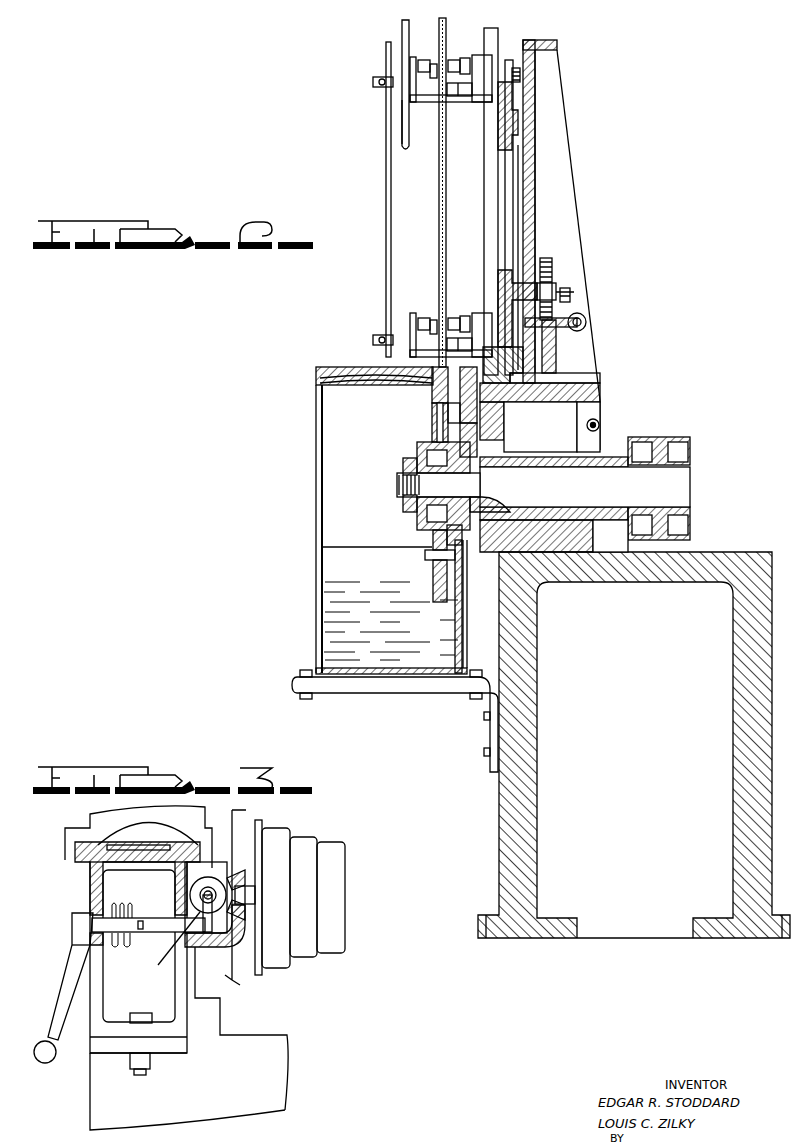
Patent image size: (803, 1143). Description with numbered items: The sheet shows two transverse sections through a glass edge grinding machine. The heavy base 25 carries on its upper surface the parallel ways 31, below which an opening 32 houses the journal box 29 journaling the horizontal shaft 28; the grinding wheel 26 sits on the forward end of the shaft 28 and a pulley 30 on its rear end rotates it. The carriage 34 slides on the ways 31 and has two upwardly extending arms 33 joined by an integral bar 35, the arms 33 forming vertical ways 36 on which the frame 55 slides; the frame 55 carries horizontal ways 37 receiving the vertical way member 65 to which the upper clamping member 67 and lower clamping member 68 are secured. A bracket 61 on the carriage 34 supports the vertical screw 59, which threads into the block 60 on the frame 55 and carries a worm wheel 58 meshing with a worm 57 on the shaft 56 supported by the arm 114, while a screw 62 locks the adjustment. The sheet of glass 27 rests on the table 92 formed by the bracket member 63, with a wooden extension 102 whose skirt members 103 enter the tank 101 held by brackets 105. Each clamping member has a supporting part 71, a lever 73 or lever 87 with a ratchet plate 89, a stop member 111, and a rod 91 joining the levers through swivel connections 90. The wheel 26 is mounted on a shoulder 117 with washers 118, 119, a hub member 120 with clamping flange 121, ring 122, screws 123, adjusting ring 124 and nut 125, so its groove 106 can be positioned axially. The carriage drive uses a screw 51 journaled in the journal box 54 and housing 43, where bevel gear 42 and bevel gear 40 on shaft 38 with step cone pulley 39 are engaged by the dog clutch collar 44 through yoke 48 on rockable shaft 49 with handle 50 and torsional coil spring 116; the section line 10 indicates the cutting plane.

In FIG. 2, the base 25 is at (499, 858).
In FIG. 3, the base 25 is at (90, 1086).
In FIG. 2, the grinding wheel 26 is at (433, 582).
In FIG. 2, the sheet of glass 27 is at (439, 244).
In FIG. 2, the horizontal shaft 28 is at (543, 487).
In FIG. 2, the journal box 29 is at (600, 528).
In FIG. 2, the pulley 30 is at (682, 438).
In FIG. 2, the ways 31 is at (598, 402).
In FIG. 3, the ways 31 is at (170, 822).
In FIG. 2, the opening 32 is at (512, 447).
In FIG. 2, the arms 33 is at (574, 182).
In FIG. 2, the carriage 34 is at (578, 388).
In FIG. 2, the bar 35 is at (548, 42).
In FIG. 2, the vertical ways 36 is at (518, 170).
In FIG. 2, the horizontal ways 37 is at (498, 138).
In FIG. 3, the shaft 38 is at (250, 898).
In FIG. 3, the step cone pulley 39 is at (300, 962).
In FIG. 3, the bevel gear 40 is at (240, 935).
In FIG. 3, the bevel gear 42 is at (225, 885).
In FIG. 3, the housing 43 is at (240, 1028).
In FIG. 3, the dog clutch collar member 44 is at (190, 892).
In FIG. 3, the yoke 48 is at (169, 953).
In FIG. 3, the rockable shaft 49 is at (155, 933).
In FIG. 3, the handle or lever 50 is at (58, 988).
In FIG. 2, the screw 51 is at (600, 423).
In FIG. 3, the screw 51 is at (200, 897).
In FIG. 2, the journal box 54 is at (590, 428).
In FIG. 2, the frame 55 is at (516, 135).
In FIG. 2, the shaft 56 is at (585, 323).
In FIG. 2, the worm 57 is at (582, 321).
In FIG. 2, the worm wheel 58 is at (578, 313).
In FIG. 2, the screw 59 is at (547, 260).
In FIG. 2, the block 60 is at (558, 292).
In FIG. 2, the bracket 61 is at (556, 350).
In FIG. 2, the screw 62 is at (570, 290).
In FIG. 2, the bracket member 63 is at (432, 392).
In FIG. 2, the vertical way member 65 is at (494, 34).
In FIG. 2, the upper glass guiding or clamping member 67 is at (478, 55).
In FIG. 2, the lower glass guiding or clamping member 68 is at (480, 314).
In FIG. 2, the supporting part 71 is at (434, 99).
In FIG. 2, the lever 73 is at (410, 318).
In FIG. 2, the lever 87 is at (400, 128).
In FIG. 2, the ratchet plate 89 is at (402, 24).
In FIG. 2, the swivel connections 90 is at (373, 82).
In FIG. 2, the rod 91 is at (386, 48).
In FIG. 2, the table 92 is at (438, 392).
In FIG. 2, the tank 101 is at (316, 617).
In FIG. 2, the wooden extension 102 is at (332, 367).
In FIG. 2, the skirt members 103 is at (316, 496).
In FIG. 2, the brackets 105 is at (426, 690).
In FIG. 2, the groove 106 is at (440, 604).
In FIG. 2, the stop member 111 is at (463, 97).
In FIG. 2, the arm 114 is at (560, 340).
In FIG. 3, the torsional coil spring 116 is at (110, 906).
In FIG. 2, the shoulder 117 is at (490, 500).
In FIG. 2, the washer 118 is at (472, 460).
In FIG. 2, the washer 119 is at (437, 514).
In FIG. 2, the grinding wheel hub member 120 is at (437, 458).
In FIG. 2, the wheel clamping flange 121 is at (462, 556).
In FIG. 2, the ring 122 is at (433, 538).
In FIG. 2, the screws 123 is at (425, 555).
In FIG. 2, the adjusting ring 124 is at (458, 540).
In FIG. 2, the nut 125 is at (403, 503).
In FIG. 3, the section line 10 is at (250, 808).